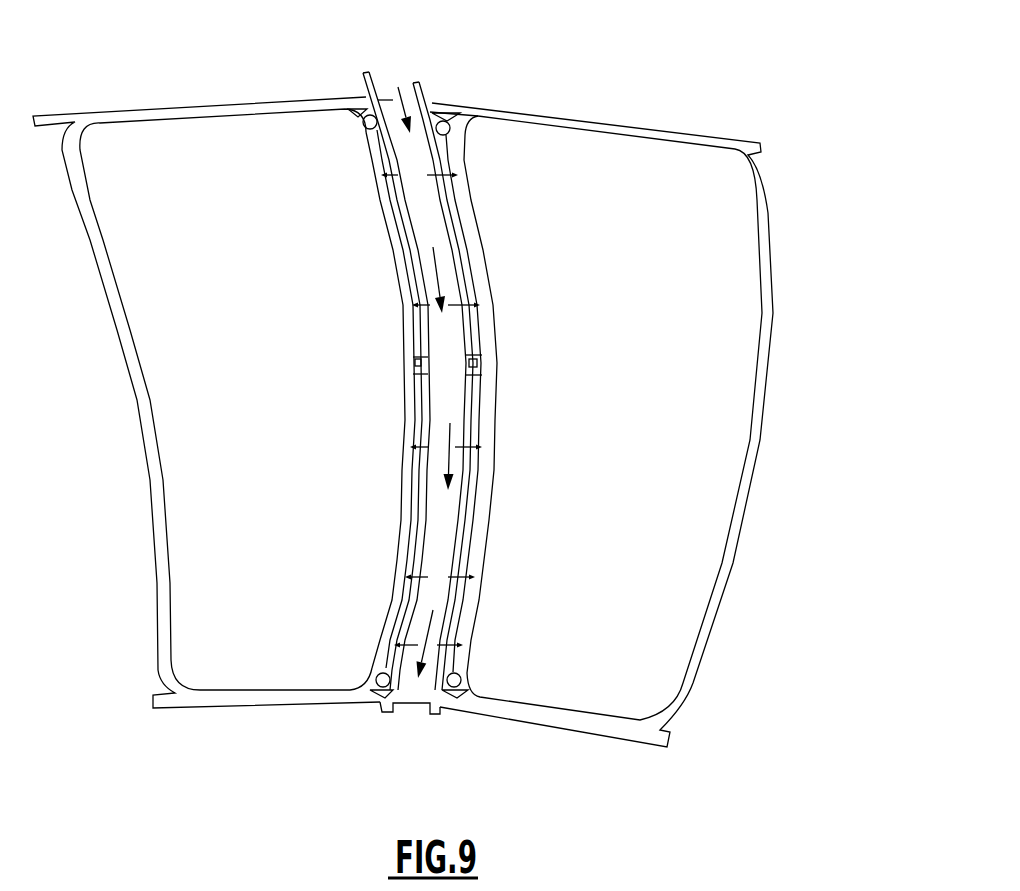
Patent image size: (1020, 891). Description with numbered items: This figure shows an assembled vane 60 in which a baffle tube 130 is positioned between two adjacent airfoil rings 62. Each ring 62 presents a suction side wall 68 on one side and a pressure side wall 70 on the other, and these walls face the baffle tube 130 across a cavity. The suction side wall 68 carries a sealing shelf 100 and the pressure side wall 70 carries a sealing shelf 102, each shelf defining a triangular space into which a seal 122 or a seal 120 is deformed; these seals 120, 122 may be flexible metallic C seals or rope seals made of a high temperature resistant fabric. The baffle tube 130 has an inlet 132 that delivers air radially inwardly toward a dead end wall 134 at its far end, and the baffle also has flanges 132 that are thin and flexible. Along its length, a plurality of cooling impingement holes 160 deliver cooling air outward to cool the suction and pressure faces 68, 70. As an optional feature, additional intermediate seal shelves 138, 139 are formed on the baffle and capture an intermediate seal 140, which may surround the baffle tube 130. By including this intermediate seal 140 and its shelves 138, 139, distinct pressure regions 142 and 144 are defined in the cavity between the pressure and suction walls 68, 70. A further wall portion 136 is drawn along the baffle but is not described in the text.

The vane 60 is at (824, 460).
The airfoil ring 62 is at (162, 596).
The suction side wall 68 is at (489, 278).
The pressure side wall 70 is at (402, 293).
The sealing shelf 100 is at (366, 100).
The sealing shelf 102 is at (453, 113).
The seal 120 is at (380, 678).
The seal 122 is at (366, 130).
The baffle tube 130 is at (421, 88).
The inlet / flange 132 is at (388, 88).
The dead end wall 134 is at (424, 700).
The lower wall portion 136 is at (464, 566).
The intermediate seal shelf 138 is at (477, 353).
The intermediate seal shelf 139 is at (482, 376).
The intermediate seal 140 is at (481, 363).
The pressure region 142 is at (462, 252).
The pressure region 144 is at (477, 487).
The cooling impingement hole 160 is at (449, 177).